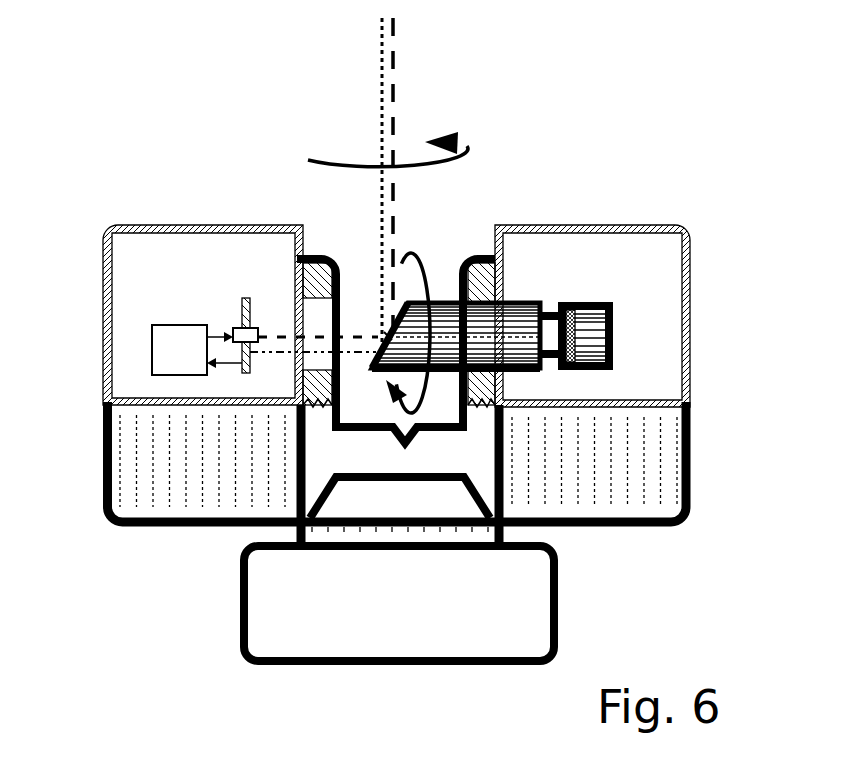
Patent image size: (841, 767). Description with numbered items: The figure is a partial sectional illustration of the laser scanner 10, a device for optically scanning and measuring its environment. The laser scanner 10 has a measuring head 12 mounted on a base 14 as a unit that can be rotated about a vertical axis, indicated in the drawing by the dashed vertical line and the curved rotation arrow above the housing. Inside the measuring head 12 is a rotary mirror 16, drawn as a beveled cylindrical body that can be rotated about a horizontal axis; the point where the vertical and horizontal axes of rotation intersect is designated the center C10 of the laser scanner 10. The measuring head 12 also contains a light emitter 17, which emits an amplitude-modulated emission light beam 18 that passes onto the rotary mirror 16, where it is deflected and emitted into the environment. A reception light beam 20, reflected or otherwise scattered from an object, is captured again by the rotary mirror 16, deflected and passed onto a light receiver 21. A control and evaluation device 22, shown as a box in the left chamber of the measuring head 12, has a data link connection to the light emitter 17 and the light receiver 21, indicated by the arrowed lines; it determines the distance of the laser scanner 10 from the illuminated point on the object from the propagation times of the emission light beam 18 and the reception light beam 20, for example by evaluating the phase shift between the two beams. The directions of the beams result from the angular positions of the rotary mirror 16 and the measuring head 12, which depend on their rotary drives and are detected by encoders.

The laser scanner 10 is at (678, 213).
The measuring head 12 is at (105, 360).
The base 14 is at (293, 608).
The rotary mirror 16 is at (447, 337).
The light emitter 17 is at (247, 333).
The emission light beam 18 is at (397, 243).
The reception light beam 20 is at (380, 103).
The light receiver 21 is at (247, 367).
The control and evaluation device 22 is at (175, 337).
The center C10 is at (388, 335).